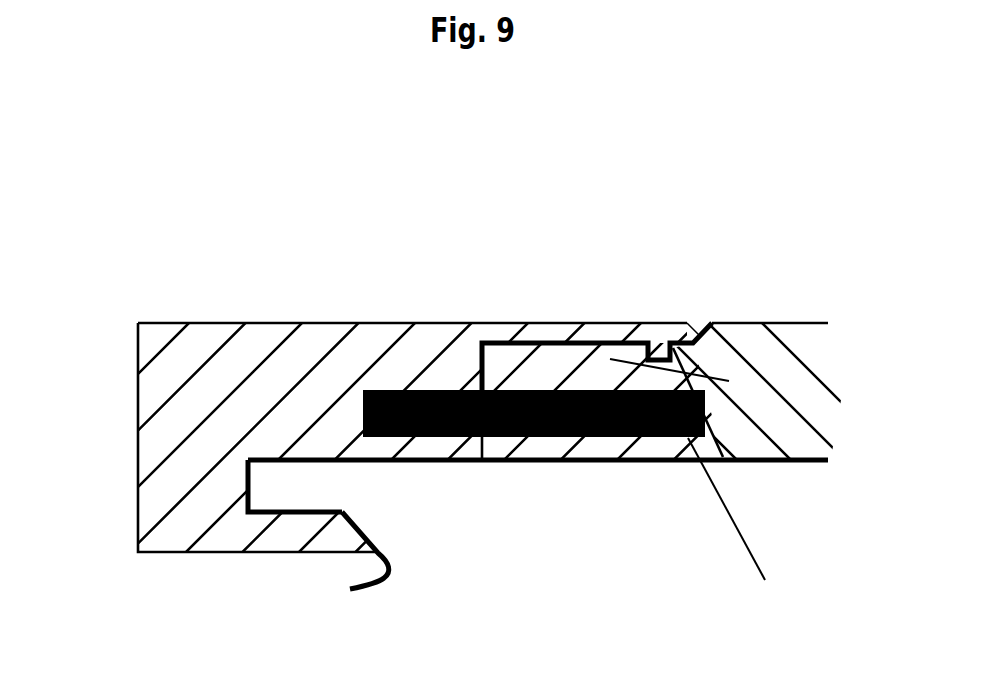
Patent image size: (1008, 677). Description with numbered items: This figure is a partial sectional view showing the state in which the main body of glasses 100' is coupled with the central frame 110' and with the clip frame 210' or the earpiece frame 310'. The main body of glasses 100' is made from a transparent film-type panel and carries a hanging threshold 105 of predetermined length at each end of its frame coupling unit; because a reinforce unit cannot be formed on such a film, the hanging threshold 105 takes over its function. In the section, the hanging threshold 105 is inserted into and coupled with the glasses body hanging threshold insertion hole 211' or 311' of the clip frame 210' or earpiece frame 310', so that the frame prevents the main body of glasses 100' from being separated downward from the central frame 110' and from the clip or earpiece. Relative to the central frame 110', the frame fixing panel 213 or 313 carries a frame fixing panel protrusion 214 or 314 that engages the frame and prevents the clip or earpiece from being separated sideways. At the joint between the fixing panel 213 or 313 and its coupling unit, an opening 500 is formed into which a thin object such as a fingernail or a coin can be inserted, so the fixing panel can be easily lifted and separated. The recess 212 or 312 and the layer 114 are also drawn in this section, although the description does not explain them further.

The main body of glasses 100' is at (504, 409).
The hanging threshold 105 is at (298, 487).
The central frame 110' is at (792, 422).
The thin film layer 114 is at (729, 381).
The clip frame 210' is at (445, 413).
The earpiece frame 310' is at (445, 413).
The glasses body hanging threshold insertion hole 211' is at (235, 583).
The glasses body hanging threshold insertion hole 311' is at (235, 583).
The recess 212 is at (564, 350).
The recess 312 is at (410, 390).
The frame fixing panel 213 is at (660, 243).
The frame fixing panel 313 is at (660, 243).
The frame fixing panel protrusion 214 is at (560, 303).
The frame fixing panel protrusion 314 is at (592, 358).
The opening 500 is at (718, 323).